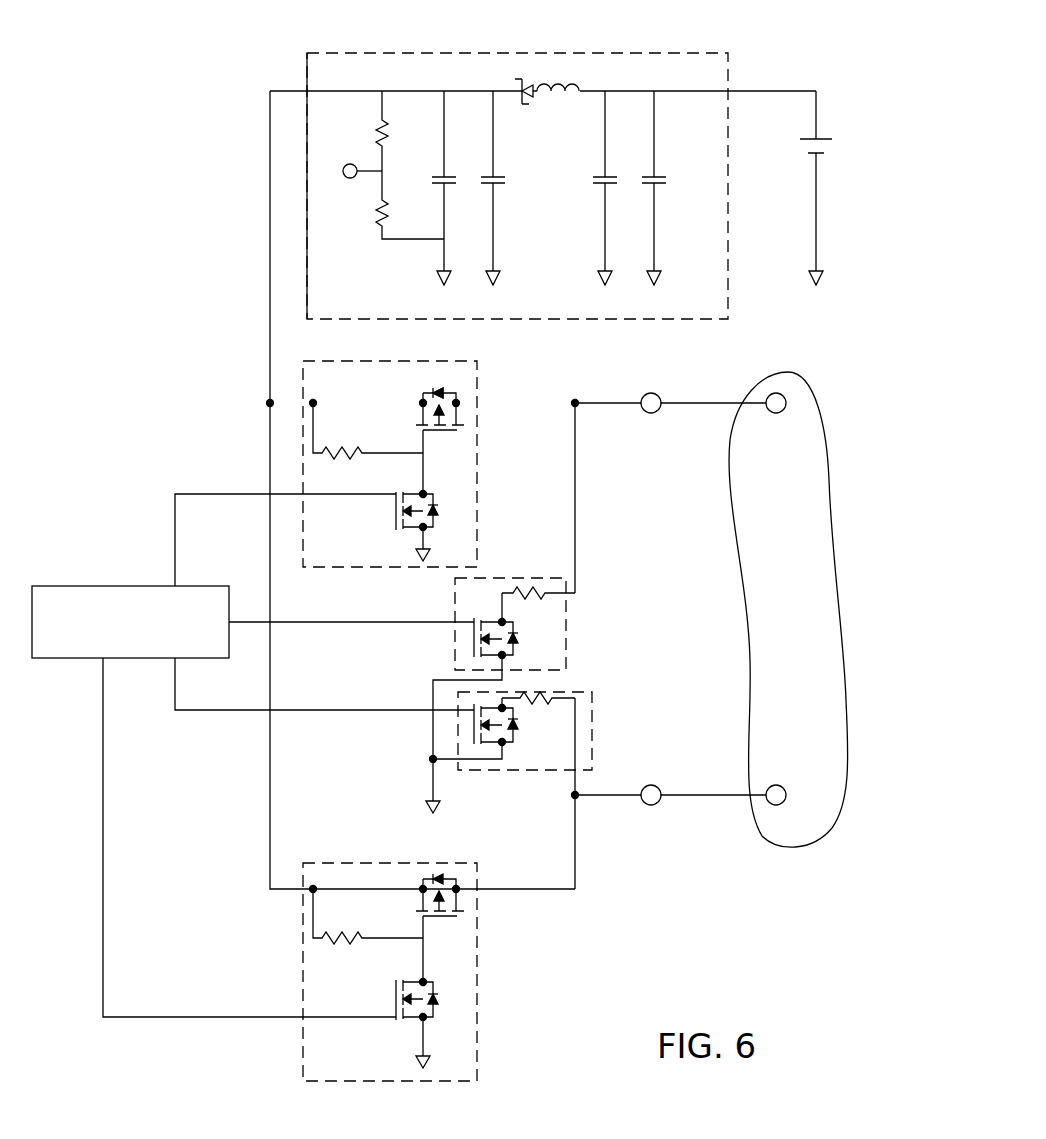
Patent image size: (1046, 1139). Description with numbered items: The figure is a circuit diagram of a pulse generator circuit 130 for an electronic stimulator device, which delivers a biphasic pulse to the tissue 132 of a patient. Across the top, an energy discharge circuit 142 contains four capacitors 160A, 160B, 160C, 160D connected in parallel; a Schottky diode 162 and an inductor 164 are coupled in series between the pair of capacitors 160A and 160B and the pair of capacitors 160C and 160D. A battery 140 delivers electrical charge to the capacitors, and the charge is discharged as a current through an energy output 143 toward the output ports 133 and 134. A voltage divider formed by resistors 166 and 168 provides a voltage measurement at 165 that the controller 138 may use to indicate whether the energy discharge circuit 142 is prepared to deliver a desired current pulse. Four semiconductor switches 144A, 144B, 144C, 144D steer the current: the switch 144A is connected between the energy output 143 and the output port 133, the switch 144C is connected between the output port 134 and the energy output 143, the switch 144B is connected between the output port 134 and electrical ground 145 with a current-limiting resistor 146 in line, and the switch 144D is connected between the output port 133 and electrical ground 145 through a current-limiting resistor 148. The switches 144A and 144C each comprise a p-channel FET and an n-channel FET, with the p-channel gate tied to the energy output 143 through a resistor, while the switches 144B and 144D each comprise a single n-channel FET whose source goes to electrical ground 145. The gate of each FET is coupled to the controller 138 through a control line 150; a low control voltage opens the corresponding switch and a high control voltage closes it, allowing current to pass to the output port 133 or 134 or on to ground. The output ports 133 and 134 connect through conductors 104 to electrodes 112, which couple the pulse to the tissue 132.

The pulse generator circuit 130 is at (172, 74).
The energy discharge circuit 142 is at (694, 53).
The energy output 143 is at (313, 90).
The Schottky diode 162 is at (526, 78).
The inductor 164 is at (566, 84).
The battery 140 is at (822, 138).
The voltage measurement point 165 is at (343, 170).
The resistor 166 is at (378, 130).
The resistor 168 is at (378, 208).
The capacitor 160A is at (432, 178).
The capacitor 160B is at (505, 184).
The capacitor 160C is at (596, 178).
The capacitor 160D is at (658, 178).
The electrical ground 145 is at (437, 275).
The semiconductor switch 144A is at (427, 447).
The semiconductor switch 144B is at (552, 741).
The semiconductor switch 144C is at (435, 952).
The semiconductor switch 144D is at (517, 666).
The current-limiting resistor 148 is at (518, 578).
The current-limiting resistor 146 is at (548, 694).
The controller 138 is at (68, 592).
The control line 150 is at (201, 493).
The output port 133 is at (646, 393).
The output port 134 is at (652, 805).
The conductor 104 is at (705, 402).
The electrode 112 is at (777, 413).
The tissue 132 is at (814, 557).